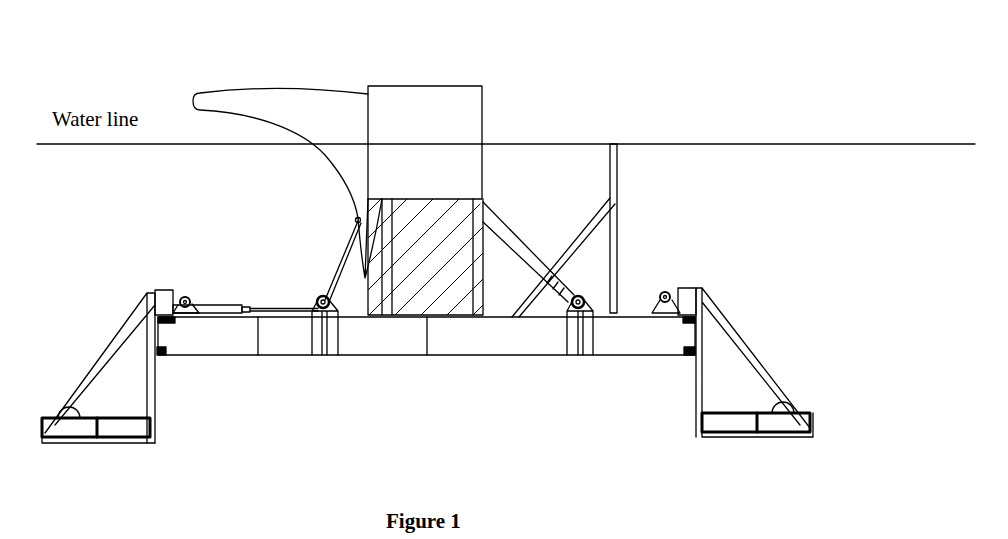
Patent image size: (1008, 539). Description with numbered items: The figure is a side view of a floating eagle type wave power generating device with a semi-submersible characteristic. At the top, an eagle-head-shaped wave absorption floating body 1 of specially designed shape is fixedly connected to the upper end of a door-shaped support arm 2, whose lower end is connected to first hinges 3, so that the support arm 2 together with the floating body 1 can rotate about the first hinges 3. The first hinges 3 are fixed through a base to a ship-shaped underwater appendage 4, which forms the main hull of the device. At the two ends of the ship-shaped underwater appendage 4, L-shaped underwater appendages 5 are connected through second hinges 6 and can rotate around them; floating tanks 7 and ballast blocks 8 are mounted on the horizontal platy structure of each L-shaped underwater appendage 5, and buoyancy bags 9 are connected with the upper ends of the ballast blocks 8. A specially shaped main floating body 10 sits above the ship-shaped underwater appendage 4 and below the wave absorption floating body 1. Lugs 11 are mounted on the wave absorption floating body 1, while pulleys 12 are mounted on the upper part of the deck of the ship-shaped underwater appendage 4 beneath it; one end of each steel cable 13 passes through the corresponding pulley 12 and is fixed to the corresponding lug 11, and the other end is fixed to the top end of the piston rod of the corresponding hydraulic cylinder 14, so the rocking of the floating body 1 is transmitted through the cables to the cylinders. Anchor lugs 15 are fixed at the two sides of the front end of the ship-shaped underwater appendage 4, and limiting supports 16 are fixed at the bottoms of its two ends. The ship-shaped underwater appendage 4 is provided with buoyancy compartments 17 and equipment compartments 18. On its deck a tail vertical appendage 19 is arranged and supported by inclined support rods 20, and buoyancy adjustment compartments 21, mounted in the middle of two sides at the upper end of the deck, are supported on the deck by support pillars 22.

The eagle-head-shaped wave absorption floating body 1 is at (280, 118).
The door-shaped support arm 2 is at (528, 240).
The first hinges 3 is at (612, 299).
The ship-shaped underwater appendage 4 is at (426, 367).
The L-shaped underwater appendages 5 is at (427, 376).
The second hinges 6 is at (422, 274).
The floating tanks 7 is at (426, 444).
The ballast blocks 8 is at (427, 444).
The buoyancy bags 9 is at (451, 394).
The main floating body 10 is at (401, 267).
The lugs 11 is at (321, 236).
The pulleys 12 is at (303, 293).
The steel cable 13 is at (283, 286).
The hydraulic cylinder 14 is at (199, 248).
The anchor lugs 15 is at (426, 358).
The limiting supports 16 is at (426, 391).
The buoyancy compartments 17 is at (425, 382).
The equipment compartments 18 is at (410, 381).
The tail vertical appendage 19 is at (652, 228).
The inclined support rods 20 is at (565, 211).
The buoyancy adjustment compartments 21 is at (454, 119).
The support pillars 22 is at (522, 192).